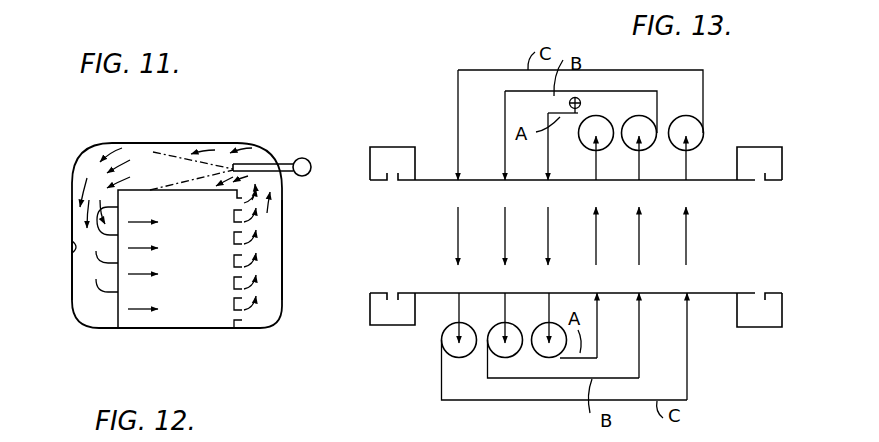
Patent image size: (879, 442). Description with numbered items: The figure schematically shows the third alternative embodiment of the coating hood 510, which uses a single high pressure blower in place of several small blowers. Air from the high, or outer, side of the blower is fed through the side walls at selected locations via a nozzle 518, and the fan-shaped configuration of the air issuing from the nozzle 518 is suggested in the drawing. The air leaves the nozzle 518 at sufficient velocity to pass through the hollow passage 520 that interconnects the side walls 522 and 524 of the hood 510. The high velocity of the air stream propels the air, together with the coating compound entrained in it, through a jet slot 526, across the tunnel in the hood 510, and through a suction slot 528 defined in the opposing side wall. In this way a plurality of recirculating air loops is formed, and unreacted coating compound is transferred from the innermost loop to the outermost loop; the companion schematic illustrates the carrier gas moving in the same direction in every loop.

The coating hood 510 is at (66, 321).
The nozzle 518 is at (306, 159).
The hollow passage 520 is at (168, 150).
The side wall 522 is at (284, 244).
The side wall 524 is at (70, 252).
The jet slot 526 is at (118, 303).
The suction slot 528 is at (233, 280).